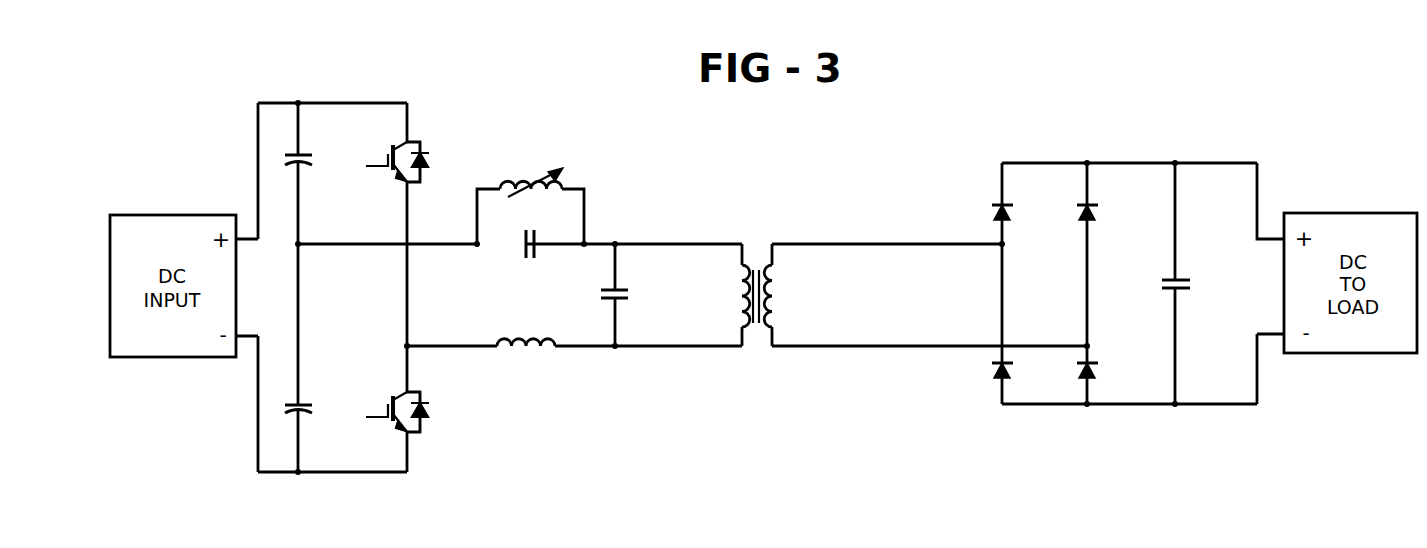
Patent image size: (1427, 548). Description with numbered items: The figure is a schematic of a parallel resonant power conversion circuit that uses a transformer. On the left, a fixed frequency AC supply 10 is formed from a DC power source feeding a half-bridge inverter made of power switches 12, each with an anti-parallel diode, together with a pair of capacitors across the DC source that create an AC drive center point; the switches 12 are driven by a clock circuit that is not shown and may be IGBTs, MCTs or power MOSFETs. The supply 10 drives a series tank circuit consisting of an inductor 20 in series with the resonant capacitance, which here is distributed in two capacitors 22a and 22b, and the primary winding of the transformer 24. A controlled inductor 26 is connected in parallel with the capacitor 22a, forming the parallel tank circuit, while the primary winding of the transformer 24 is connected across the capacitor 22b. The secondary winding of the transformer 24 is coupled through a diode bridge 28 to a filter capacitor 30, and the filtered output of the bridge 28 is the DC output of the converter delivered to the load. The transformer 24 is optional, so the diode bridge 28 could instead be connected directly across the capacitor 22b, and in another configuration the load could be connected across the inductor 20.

The fixed frequency AC supply 10 is at (491, 406).
The power switches 12 is at (392, 146).
The inductor 20 is at (527, 348).
The capacitor 22a is at (522, 251).
The capacitor 22b is at (620, 288).
The transformer 24 is at (757, 268).
The controlled inductor 26 is at (568, 184).
The diode bridge 28 is at (968, 216).
The filter capacitor 30 is at (1164, 278).